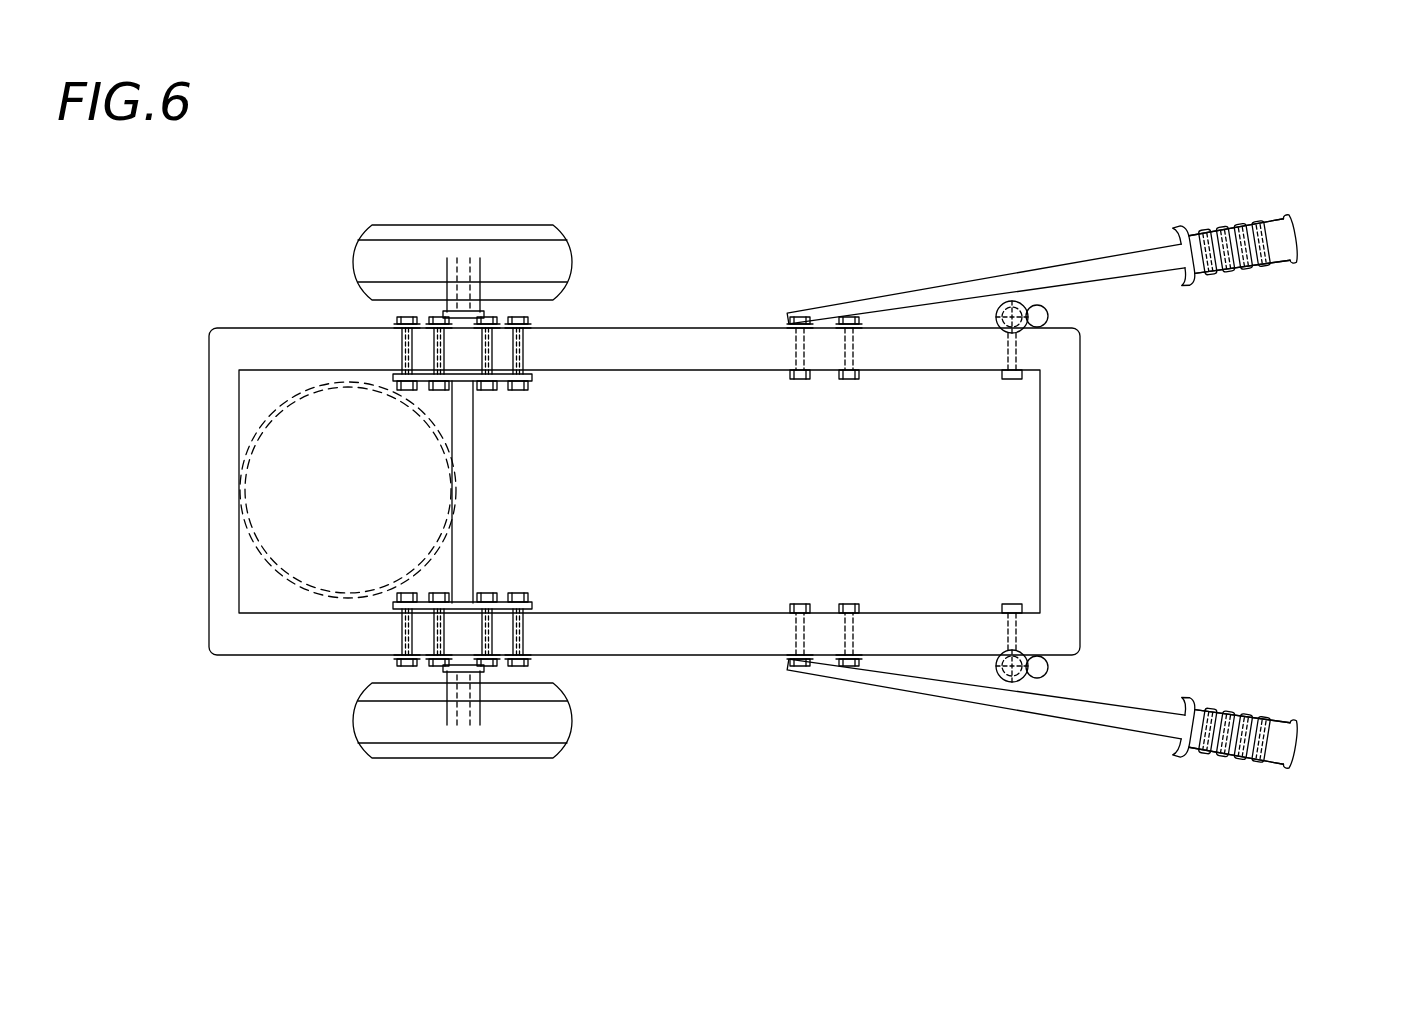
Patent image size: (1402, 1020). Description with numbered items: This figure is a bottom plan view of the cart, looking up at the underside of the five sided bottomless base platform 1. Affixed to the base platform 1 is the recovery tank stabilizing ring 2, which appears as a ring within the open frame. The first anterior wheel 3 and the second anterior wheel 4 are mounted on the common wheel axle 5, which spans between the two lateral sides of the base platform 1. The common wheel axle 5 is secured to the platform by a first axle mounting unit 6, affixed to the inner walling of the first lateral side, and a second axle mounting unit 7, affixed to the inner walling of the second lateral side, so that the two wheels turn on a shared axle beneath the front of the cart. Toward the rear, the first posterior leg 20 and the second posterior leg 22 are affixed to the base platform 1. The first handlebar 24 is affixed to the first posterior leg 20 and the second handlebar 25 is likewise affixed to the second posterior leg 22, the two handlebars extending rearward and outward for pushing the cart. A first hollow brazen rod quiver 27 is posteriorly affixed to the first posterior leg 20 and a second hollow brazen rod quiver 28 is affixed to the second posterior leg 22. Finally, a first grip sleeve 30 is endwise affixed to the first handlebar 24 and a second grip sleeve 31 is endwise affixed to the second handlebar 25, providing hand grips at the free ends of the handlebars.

The five sided bottomless base platform 1 is at (675, 572).
The recovery tank stabilizing ring 2 is at (242, 527).
The first anterior wheel 3 is at (541, 252).
The second anterior wheel 4 is at (513, 741).
The common wheel axle 5 is at (471, 508).
The first axle mounting unit 6 is at (532, 603).
The second axle mounting unit 7 is at (531, 379).
The first posterior leg 20 is at (1010, 301).
The second posterior leg 22 is at (1012, 683).
The first handlebar 24 is at (1103, 266).
The second handlebar 25 is at (1143, 726).
The first hollow brazen rod quiver 27 is at (1050, 312).
The second hollow brazen rod quiver 28 is at (1050, 671).
The first grip sleeve 30 is at (1272, 230).
The second grip sleeve 31 is at (1280, 735).